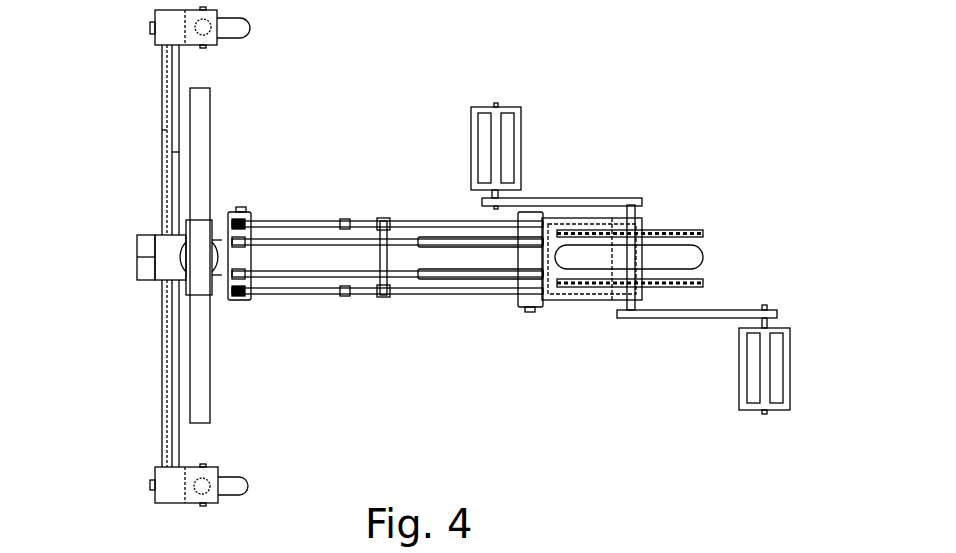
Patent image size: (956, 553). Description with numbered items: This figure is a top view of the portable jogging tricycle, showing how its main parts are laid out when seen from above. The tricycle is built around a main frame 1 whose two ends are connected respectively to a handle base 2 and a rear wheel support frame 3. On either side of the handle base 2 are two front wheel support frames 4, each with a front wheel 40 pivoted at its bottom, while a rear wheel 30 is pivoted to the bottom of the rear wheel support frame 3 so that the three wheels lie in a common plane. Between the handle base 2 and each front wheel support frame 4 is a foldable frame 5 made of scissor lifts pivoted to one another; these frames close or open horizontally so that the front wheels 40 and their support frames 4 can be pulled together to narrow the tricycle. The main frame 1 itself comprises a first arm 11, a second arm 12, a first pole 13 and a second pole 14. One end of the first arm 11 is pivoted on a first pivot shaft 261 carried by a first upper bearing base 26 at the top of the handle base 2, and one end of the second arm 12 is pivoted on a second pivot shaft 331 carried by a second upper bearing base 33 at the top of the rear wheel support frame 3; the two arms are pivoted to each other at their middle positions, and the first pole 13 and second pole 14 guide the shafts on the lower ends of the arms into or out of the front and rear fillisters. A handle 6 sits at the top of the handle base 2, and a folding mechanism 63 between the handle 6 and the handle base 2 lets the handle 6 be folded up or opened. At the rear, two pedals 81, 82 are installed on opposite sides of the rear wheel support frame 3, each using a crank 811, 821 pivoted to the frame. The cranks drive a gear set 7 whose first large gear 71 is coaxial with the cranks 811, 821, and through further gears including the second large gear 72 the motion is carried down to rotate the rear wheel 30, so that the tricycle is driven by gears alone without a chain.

The main frame 1 is at (387, 303).
The handle base 2 is at (212, 290).
The rear wheel support frame 3 is at (590, 300).
The front wheel support frame 4 is at (170, 497).
The foldable frame 5 is at (160, 350).
The handle 6 is at (206, 355).
The gear set 7 is at (666, 223).
The first arm 11 is at (378, 297).
The second arm 12 is at (418, 298).
The first pole 13 is at (300, 300).
The second pole 14 is at (490, 283).
The first upper bearing base 26 is at (250, 212).
The rear wheel 30 is at (697, 256).
The second upper bearing base 33 is at (538, 308).
The front wheel 40 is at (237, 492).
The folding mechanism 63 is at (147, 238).
The first large gear 71 is at (703, 232).
The second large gear 72 is at (703, 283).
The pedal 81 is at (742, 392).
The pedal 82 is at (521, 140).
The first pivot shaft 261 is at (241, 207).
The second pivot shaft 331 is at (531, 312).
The crank 811 is at (700, 318).
The crank 821 is at (592, 198).